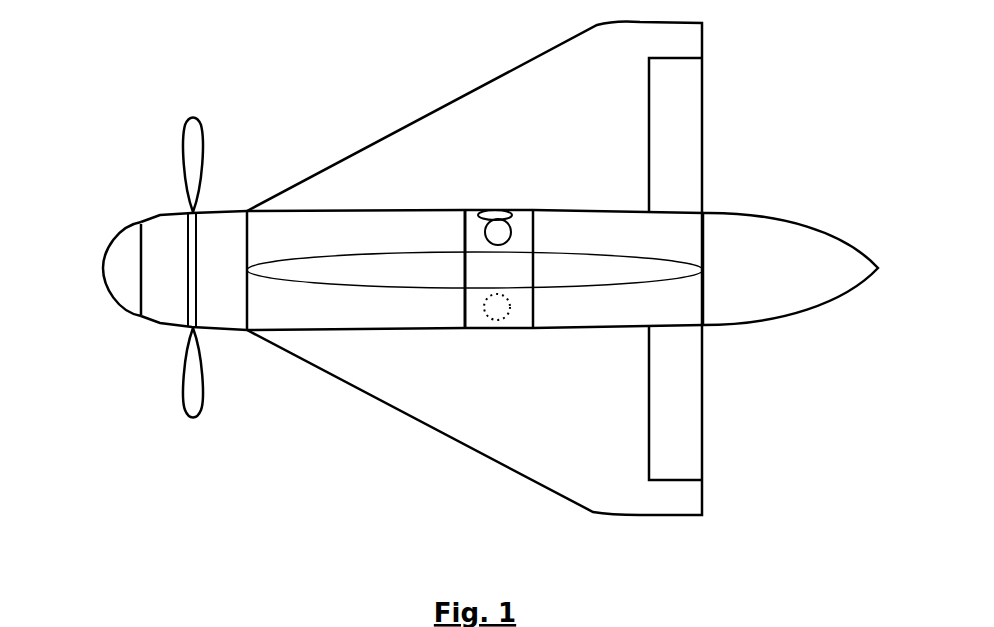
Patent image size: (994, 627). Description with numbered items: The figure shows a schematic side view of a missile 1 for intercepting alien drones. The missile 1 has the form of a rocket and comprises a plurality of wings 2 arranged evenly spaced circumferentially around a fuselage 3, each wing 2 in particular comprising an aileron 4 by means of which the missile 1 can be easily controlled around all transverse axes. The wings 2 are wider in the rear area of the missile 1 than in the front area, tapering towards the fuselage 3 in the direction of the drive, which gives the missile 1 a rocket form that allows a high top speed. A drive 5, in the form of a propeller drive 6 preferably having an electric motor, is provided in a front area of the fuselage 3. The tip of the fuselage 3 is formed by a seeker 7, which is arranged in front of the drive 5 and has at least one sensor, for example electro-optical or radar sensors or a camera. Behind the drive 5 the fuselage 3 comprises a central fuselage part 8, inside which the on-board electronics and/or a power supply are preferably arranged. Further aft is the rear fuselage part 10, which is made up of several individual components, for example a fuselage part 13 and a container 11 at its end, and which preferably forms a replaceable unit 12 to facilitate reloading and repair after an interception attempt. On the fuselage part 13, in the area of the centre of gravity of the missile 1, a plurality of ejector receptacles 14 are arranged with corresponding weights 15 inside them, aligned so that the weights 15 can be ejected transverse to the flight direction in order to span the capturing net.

The missile 1 is at (221, 461).
The wing 2 is at (460, 162).
The fuselage 3 is at (302, 312).
The aileron 4 is at (680, 150).
The drive 5 is at (138, 371).
The propeller drive 6 is at (140, 360).
The seeker 7 is at (122, 288).
The central fuselage part 8 is at (268, 233).
The rear fuselage part 10 is at (563, 318).
The container 11 is at (758, 307).
The replaceable unit 12 is at (523, 317).
The fuselage part 13 is at (563, 318).
The ejector receptacle 14 is at (513, 217).
The weight 15 is at (498, 237).